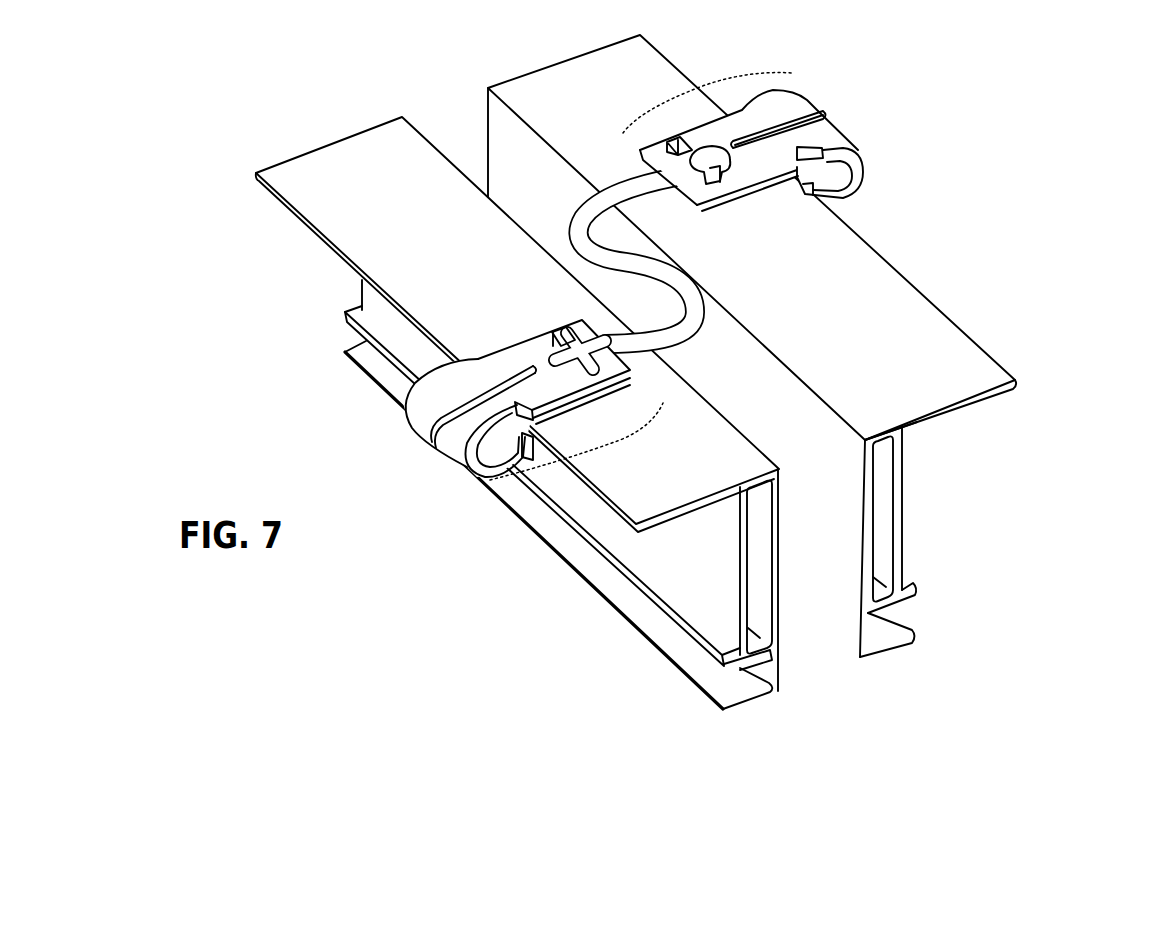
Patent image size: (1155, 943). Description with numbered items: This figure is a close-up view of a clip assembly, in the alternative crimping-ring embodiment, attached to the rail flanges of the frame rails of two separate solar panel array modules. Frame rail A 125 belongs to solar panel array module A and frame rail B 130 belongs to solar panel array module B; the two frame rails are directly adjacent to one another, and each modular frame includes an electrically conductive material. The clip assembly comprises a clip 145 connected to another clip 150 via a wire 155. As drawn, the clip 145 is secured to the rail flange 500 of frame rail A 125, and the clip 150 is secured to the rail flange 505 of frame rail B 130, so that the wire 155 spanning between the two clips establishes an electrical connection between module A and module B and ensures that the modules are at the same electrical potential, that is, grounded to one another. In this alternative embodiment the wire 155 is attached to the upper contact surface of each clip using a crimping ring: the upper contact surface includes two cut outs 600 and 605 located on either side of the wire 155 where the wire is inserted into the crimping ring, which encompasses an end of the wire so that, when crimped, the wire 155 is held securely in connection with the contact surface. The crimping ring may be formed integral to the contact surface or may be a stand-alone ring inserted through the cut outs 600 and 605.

The frame rail A 125 is at (810, 346).
The frame rail B 130 is at (599, 441).
The clip 145 is at (768, 122).
The clip 150 is at (596, 471).
The wire 155 is at (572, 209).
The rail flange 500 is at (810, 238).
The rail flange 505 is at (677, 531).
The cut out 600 is at (704, 135).
The cut out 605 is at (731, 162).